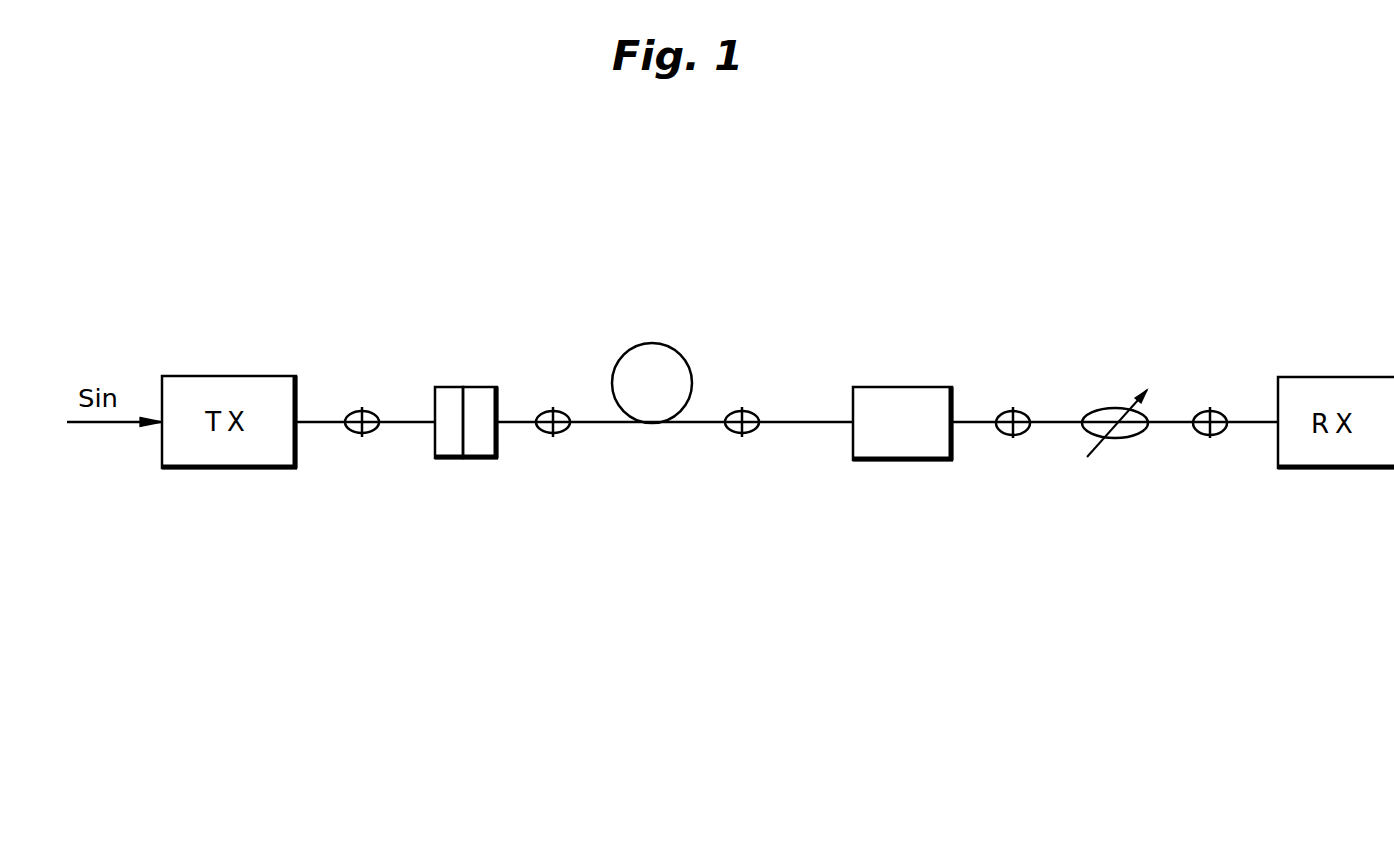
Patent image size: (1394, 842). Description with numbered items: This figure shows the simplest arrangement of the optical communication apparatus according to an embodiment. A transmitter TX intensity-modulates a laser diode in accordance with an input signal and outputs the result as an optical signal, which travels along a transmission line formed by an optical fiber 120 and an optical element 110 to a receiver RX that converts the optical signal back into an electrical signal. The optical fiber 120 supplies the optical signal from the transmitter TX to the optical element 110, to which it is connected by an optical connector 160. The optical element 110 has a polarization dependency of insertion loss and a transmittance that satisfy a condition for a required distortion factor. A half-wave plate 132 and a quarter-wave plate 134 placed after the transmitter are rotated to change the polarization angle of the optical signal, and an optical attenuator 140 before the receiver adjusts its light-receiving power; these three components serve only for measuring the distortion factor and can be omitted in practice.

The optical element 110 is at (900, 387).
The optical fiber 120 is at (681, 353).
The λ/2 plate 132 is at (473, 388).
The λ/4 plate 134 is at (450, 458).
The optical attenuator 140 is at (1133, 440).
The optical connector 160 is at (349, 434).